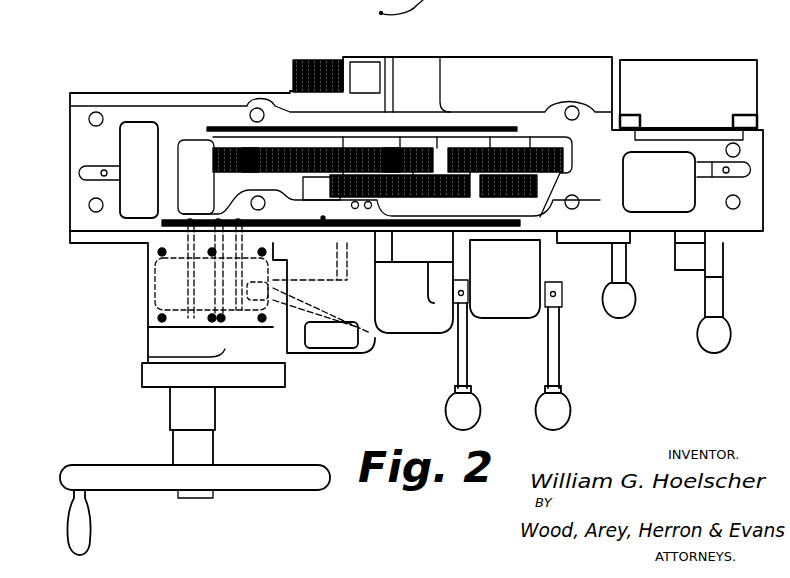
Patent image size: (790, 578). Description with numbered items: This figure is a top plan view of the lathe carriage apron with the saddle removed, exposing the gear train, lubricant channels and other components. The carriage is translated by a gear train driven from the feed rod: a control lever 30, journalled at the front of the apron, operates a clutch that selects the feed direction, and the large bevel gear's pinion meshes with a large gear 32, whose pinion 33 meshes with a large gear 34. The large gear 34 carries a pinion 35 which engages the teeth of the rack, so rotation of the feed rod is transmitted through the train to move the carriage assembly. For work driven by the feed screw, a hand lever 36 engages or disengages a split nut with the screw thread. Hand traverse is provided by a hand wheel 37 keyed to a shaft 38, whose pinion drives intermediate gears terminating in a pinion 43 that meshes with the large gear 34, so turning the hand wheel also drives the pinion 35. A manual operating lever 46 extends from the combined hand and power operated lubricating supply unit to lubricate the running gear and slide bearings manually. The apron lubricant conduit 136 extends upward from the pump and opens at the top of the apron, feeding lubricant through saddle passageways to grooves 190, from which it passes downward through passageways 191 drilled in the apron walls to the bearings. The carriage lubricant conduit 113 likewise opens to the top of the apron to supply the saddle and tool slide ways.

The control lever 30 is at (588, 243).
The large gear 32 is at (413, 197).
The pinion 33 is at (430, 153).
The large gear 34 is at (292, 170).
The pinion 35 is at (322, 60).
The hand lever 36 is at (724, 300).
The hand wheel 37 is at (151, 490).
The shaft 38 is at (188, 498).
The pinion 43 is at (213, 163).
The manual operating lever 46 is at (384, 334).
The carriage lubricant conduit 113 is at (398, 217).
The apron lubricant conduit 136 is at (368, 201).
The grooves 190 is at (493, 218).
The passageways 191 is at (305, 127).